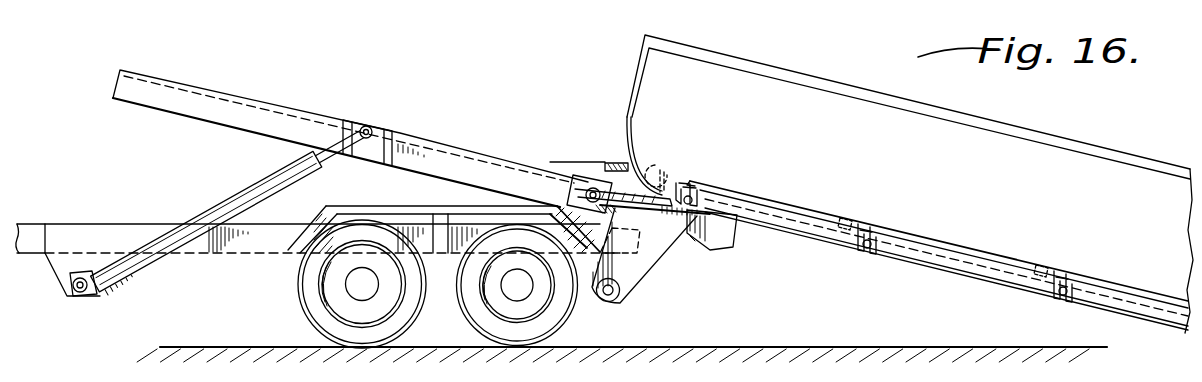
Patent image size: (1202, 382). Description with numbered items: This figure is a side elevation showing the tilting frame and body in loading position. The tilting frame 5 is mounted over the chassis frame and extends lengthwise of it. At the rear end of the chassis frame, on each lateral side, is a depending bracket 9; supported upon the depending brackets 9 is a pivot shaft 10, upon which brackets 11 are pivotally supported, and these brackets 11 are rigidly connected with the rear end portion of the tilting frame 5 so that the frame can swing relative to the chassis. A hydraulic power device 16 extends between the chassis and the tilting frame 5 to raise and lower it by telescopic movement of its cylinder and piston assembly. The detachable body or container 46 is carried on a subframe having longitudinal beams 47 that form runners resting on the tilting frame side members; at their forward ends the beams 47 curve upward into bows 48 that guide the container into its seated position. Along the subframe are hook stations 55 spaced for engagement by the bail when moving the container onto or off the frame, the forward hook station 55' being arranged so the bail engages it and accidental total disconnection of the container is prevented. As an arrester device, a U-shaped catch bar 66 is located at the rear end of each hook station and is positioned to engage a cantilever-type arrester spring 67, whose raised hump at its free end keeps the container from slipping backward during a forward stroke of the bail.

The tilting frame 5 is at (319, 104).
The depending bracket 9 is at (376, 268).
The pivot shaft 10 is at (623, 297).
The bracket 11 is at (644, 263).
The hydraulic ram 16 is at (224, 198).
The detachable body or container 46 is at (1063, 162).
The longitudinal beam 47 is at (975, 272).
The bow 48 is at (623, 136).
The hook station 55 is at (957, 224).
The forward hook station 55' is at (669, 155).
The catch bar 66 is at (680, 195).
The arrester spring 67 is at (656, 203).